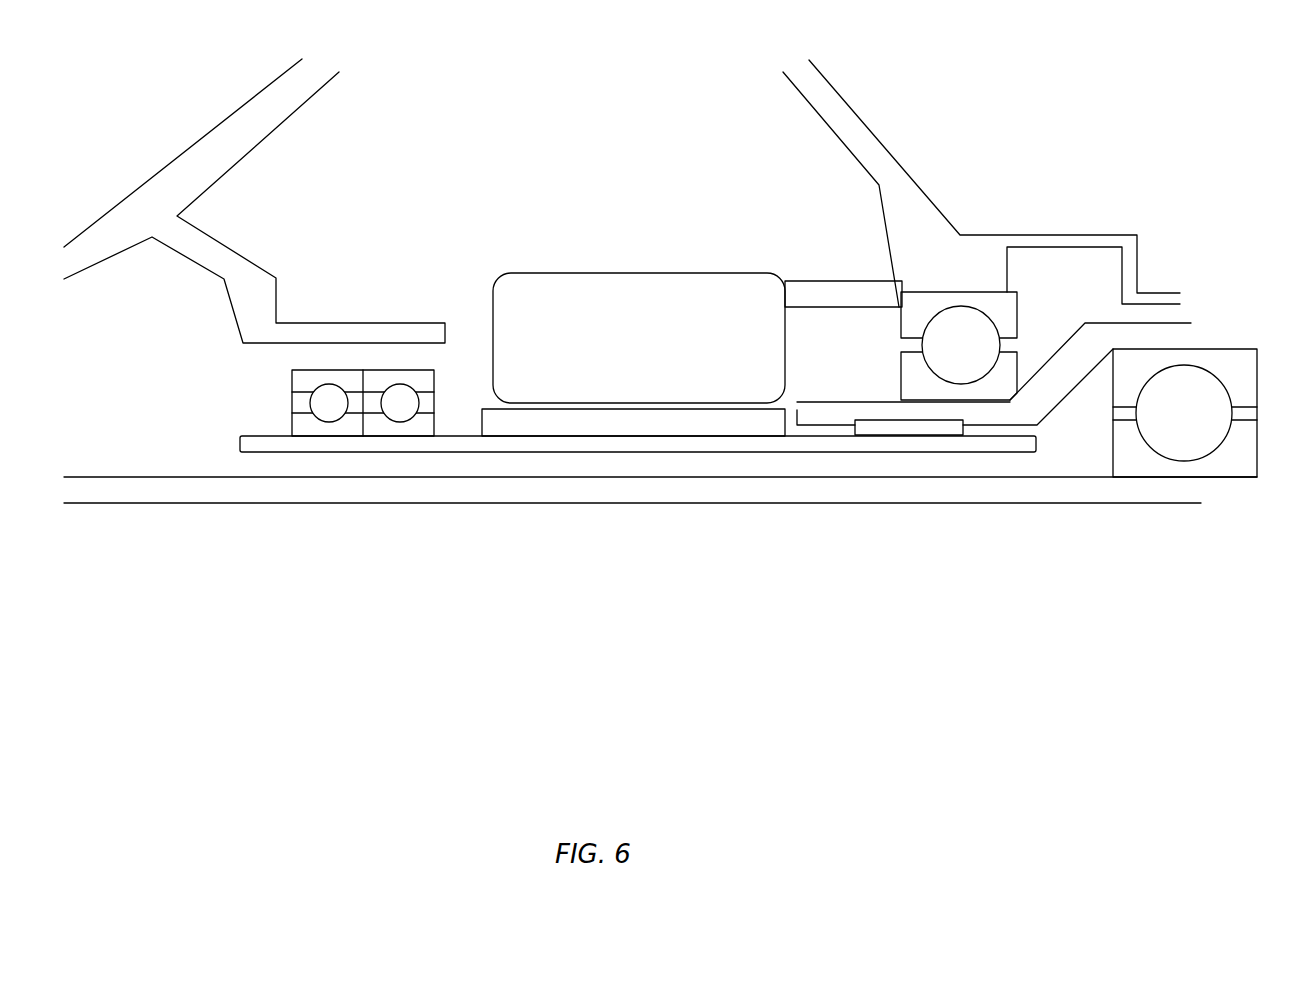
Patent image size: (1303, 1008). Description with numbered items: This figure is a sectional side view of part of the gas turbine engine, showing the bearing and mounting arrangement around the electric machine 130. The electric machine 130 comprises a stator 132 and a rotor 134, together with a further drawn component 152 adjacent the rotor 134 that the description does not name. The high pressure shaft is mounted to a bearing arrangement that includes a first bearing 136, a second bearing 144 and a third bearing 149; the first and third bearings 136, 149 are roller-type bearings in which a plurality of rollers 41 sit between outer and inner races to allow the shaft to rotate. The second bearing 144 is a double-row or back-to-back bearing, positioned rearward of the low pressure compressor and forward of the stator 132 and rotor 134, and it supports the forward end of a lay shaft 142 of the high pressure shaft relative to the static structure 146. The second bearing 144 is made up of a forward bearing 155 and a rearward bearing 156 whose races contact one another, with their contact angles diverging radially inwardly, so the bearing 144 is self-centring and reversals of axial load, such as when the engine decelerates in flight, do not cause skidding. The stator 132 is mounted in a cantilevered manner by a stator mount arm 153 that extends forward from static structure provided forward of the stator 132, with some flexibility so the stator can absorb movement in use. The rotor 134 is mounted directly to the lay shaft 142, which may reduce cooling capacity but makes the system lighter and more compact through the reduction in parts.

The rollers 41 is at (987, 297).
The electric machine 130 is at (592, 236).
The stator 132 is at (733, 272).
The rotor 134 is at (692, 421).
The first bearing 136 is at (972, 272).
The lay shaft 142 is at (535, 452).
The second bearing 144 is at (348, 456).
The static structure 146 is at (233, 317).
The third bearing 149 is at (1230, 312).
The motor mount 152 is at (592, 403).
The stator mount arm 153 is at (822, 308).
The forward bearing 155 is at (292, 388).
The rearward bearing 156 is at (434, 380).